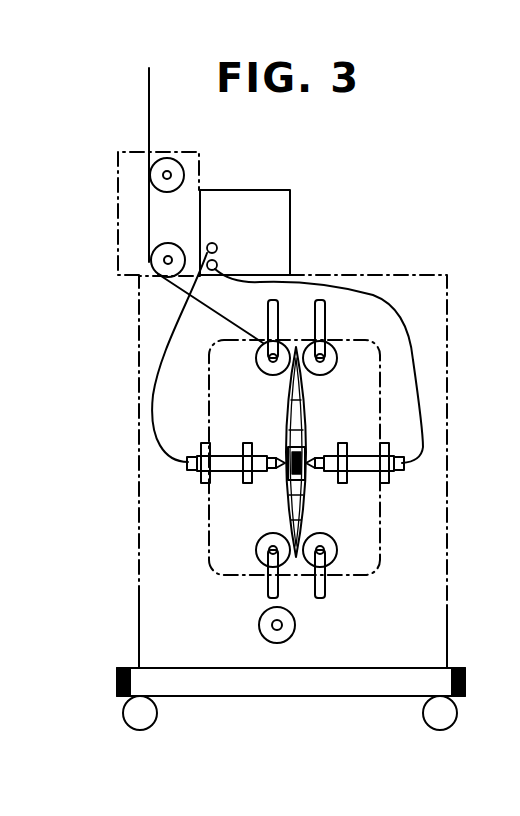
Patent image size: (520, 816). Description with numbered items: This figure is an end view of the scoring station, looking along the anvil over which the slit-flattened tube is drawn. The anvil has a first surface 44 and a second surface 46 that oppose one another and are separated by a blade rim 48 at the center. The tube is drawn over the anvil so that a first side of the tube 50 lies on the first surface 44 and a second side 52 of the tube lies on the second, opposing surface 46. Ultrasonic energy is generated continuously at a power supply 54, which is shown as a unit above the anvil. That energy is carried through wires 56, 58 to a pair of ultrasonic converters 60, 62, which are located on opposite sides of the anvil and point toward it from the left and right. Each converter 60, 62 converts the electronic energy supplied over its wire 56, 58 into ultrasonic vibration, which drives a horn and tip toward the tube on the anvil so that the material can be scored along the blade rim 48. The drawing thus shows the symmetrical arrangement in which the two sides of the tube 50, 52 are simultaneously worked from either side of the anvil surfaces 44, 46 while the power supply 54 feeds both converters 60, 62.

The first surface 44 is at (288, 457).
The second surface 46 is at (303, 457).
The blade rim 48 is at (290, 483).
The first side of the tube 50 is at (293, 392).
The second side of the tube 52 is at (300, 392).
The power supply 54 is at (262, 237).
The wire 56 is at (162, 352).
The wire 58 is at (370, 292).
The ultrasonic converter 60 is at (210, 500).
The ultrasonic converter 62 is at (360, 467).